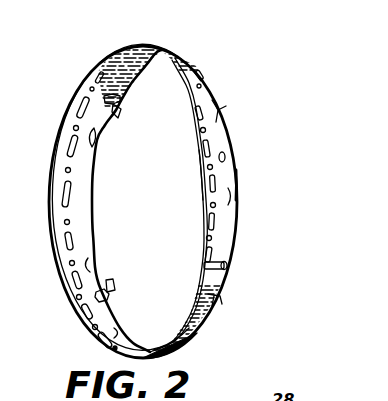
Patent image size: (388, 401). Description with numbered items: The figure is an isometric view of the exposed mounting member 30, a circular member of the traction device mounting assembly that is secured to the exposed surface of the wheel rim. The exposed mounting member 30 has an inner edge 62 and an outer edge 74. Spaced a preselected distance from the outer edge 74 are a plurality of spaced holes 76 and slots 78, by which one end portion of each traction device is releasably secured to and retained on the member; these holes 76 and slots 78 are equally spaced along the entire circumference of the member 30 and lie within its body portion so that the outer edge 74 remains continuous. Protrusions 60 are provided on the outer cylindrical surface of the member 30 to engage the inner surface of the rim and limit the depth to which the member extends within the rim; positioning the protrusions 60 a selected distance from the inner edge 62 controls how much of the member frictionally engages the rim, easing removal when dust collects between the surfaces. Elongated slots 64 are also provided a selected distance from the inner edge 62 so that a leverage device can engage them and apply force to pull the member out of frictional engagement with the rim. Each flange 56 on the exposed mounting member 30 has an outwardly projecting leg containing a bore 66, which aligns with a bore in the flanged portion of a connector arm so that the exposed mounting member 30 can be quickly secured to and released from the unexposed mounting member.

The exposed mounting member 30 is at (131, 47).
The slots 78 is at (84, 100).
The holes 76 is at (75, 126).
The bore 66 is at (118, 100).
The flange 56 is at (110, 108).
The elongated slots 64 is at (204, 72).
The protrusions 60 is at (221, 105).
The inner edge 62 is at (236, 178).
The outer edge 74 is at (184, 198).